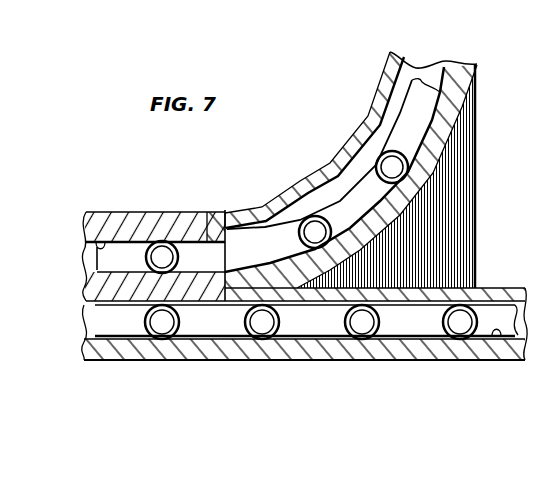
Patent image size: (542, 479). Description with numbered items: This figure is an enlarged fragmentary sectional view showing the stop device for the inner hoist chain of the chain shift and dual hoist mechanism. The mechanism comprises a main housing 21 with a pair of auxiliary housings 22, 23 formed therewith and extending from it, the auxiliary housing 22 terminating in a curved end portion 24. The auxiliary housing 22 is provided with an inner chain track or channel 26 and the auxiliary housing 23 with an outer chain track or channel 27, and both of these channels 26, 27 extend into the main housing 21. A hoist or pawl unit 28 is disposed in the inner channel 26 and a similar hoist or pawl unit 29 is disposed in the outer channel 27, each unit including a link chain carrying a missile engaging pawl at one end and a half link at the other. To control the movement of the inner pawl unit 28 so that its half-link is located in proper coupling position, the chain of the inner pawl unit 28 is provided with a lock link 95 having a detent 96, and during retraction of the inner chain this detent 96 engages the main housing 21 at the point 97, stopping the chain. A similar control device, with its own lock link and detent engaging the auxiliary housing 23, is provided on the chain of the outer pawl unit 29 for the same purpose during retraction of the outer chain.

The main housing 21 is at (130, 214).
The auxiliary housing 22 is at (383, 99).
The auxiliary housing 23 is at (493, 292).
The curved end portion 24 is at (468, 81).
The inner chain track or channel 26 is at (100, 244).
The outer chain track or channel 27 is at (496, 338).
The hoist or pawl unit 28 is at (421, 113).
The hoist or pawl unit 29 is at (400, 327).
The lock link 95 is at (265, 237).
The detent 96 is at (237, 215).
The engagement point on housing 97 is at (216, 233).